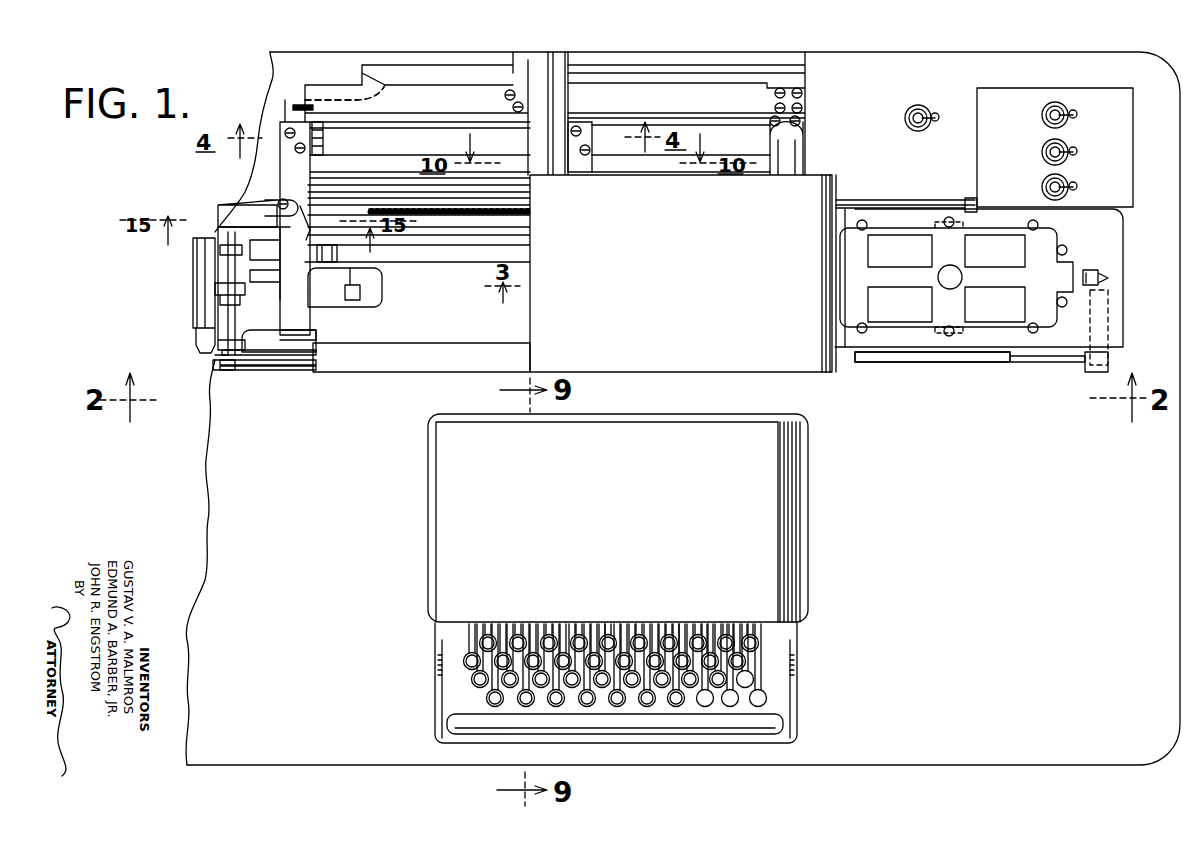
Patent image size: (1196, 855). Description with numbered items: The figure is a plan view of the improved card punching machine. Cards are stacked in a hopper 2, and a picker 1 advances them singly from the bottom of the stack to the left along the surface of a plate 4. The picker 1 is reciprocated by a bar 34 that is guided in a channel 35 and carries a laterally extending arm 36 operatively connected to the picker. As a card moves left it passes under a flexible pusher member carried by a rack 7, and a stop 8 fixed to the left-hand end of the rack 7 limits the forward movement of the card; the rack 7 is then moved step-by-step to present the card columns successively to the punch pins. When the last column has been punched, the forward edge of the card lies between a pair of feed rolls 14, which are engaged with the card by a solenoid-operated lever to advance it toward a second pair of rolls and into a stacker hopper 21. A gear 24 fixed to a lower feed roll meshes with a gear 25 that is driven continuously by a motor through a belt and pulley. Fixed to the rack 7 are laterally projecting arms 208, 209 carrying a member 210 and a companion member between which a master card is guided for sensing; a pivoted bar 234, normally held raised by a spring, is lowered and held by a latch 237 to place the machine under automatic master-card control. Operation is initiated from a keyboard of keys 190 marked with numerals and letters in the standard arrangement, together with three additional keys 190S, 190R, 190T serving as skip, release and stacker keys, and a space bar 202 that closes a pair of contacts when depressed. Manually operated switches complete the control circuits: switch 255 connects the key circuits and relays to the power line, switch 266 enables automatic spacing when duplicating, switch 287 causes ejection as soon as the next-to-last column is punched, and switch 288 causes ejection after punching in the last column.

The picker 1 is at (1092, 268).
The hopper 2 is at (958, 325).
The plate 4 is at (410, 335).
The rack 7 is at (525, 215).
The stop 8 is at (328, 262).
The feed rolls 14 is at (365, 290).
The hopper 21 is at (195, 300).
The gear 24 is at (232, 372).
The gear 25 is at (275, 368).
The bar 34 is at (1070, 360).
The channel 35 is at (998, 362).
The arm 36 is at (1110, 305).
The keys 190 is at (472, 676).
The skip key 190S is at (752, 680).
The stacker key 190T is at (767, 697).
The release key 190R is at (730, 706).
The space bar 202 is at (450, 722).
The arm 208 is at (282, 170).
The arm 209 is at (592, 163).
The member 210 is at (323, 140).
The bar 234 is at (342, 92).
The latch 237 is at (300, 105).
The manually operated switch 255 is at (1075, 118).
The manually operated switch 266 is at (938, 121).
The switch 287 is at (1075, 155).
The switch 288 is at (1075, 190).